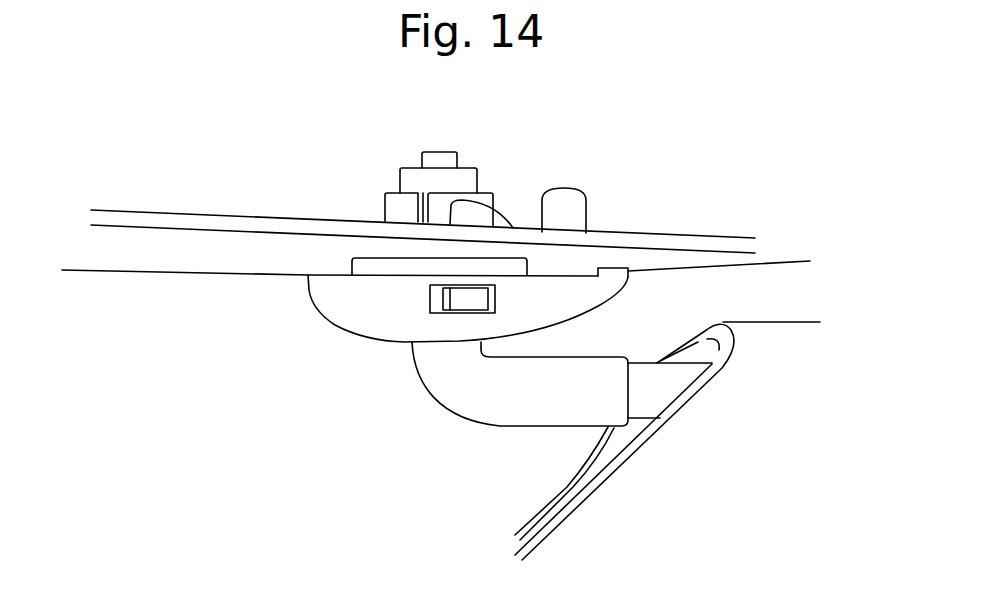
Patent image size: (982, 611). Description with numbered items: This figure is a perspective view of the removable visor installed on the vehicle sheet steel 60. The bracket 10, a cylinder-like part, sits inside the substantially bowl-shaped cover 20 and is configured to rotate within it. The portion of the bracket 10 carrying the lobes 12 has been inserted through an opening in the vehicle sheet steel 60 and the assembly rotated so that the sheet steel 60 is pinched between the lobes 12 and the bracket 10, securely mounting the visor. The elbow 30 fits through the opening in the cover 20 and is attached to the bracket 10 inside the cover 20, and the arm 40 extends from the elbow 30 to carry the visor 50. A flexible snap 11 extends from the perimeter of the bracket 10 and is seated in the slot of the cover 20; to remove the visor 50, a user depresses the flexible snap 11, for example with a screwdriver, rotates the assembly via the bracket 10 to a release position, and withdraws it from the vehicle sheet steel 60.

The bracket 10 is at (412, 175).
The flexible snap 11 is at (430, 298).
The lobes 12 is at (478, 213).
The cover 20 is at (330, 312).
The elbow 30 is at (462, 403).
The arm 40 is at (649, 370).
The visor 50 is at (777, 353).
The vehicle sheet steel 60 is at (268, 220).